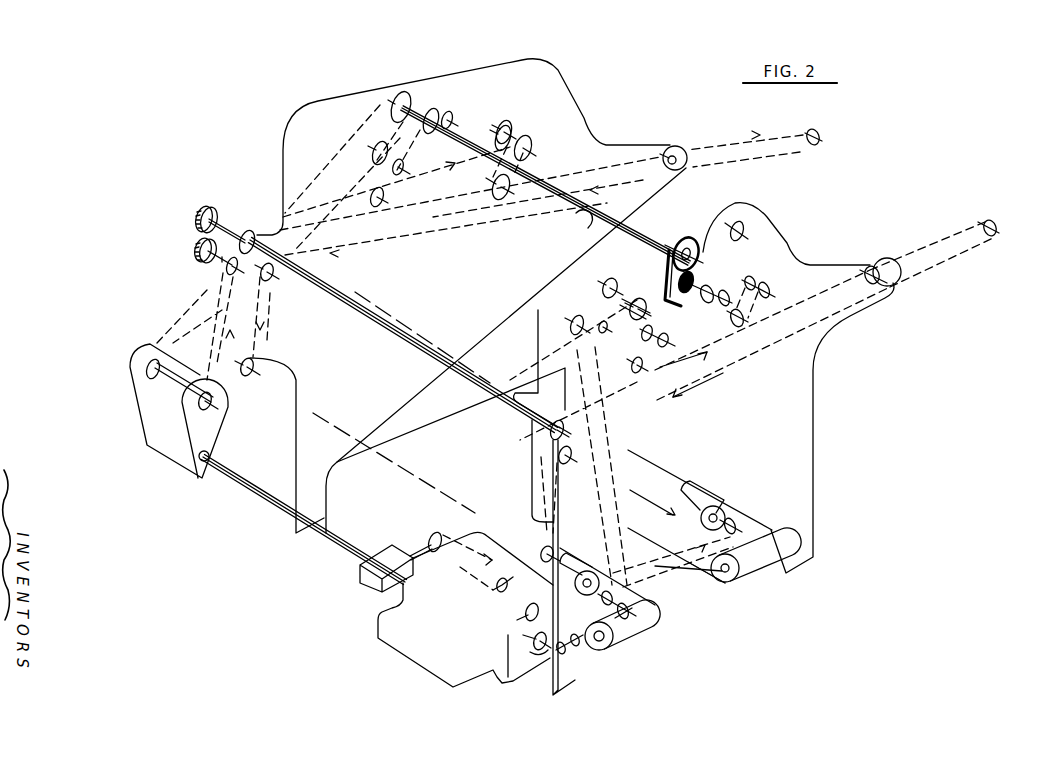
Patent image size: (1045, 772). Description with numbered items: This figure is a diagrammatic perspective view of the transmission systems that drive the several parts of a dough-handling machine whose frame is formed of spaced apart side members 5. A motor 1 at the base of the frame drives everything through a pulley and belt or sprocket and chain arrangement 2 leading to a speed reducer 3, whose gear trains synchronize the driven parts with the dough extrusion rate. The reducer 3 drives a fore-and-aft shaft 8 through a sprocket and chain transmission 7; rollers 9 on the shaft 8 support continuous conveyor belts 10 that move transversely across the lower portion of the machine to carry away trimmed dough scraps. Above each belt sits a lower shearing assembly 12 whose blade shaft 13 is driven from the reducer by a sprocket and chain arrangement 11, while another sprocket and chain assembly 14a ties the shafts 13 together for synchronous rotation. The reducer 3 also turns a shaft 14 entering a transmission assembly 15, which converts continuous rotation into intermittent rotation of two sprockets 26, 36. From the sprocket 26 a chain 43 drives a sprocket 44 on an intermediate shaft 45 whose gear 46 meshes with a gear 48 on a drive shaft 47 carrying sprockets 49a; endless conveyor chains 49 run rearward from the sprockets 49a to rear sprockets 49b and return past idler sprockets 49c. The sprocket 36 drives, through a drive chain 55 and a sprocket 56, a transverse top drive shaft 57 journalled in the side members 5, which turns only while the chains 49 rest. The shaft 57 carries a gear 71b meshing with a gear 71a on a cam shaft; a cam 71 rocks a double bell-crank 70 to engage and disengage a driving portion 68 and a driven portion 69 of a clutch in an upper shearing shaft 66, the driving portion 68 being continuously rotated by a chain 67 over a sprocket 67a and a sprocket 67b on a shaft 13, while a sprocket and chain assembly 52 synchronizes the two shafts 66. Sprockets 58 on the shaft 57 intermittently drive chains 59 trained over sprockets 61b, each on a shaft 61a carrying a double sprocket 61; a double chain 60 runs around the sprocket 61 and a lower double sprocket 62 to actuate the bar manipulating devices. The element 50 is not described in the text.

The motor 1 is at (372, 578).
The pulley and belt or sprocket and chain arrangement 2 is at (467, 570).
The speed reducer 3 is at (437, 643).
The side members 5 is at (540, 84).
The sprocket and chain transmission 7 is at (550, 608).
The shaft 8 is at (690, 587).
The rollers 9 is at (728, 583).
The conveyor belts 10 is at (752, 525).
The sprocket and chain arrangement 11 is at (580, 640).
The lower shearing assembly 12 is at (567, 570).
The shaft 13 is at (722, 523).
The shaft 14 is at (250, 487).
The sprocket and chain assembly 14a is at (658, 569).
The transmission assembly 15 is at (167, 447).
The sprocket 26 is at (203, 402).
The sprocket 36 is at (150, 366).
The chain 43 is at (212, 340).
The sprocket 44 is at (233, 240).
The intermediate rotatable shaft 45 is at (222, 257).
The gear 46 is at (203, 246).
The drive shaft 47 is at (385, 335).
The gear 48 is at (206, 209).
The endless conveyor chains 49 is at (593, 167).
The sprocket 49a is at (553, 430).
The sprocket 49b is at (885, 260).
The guide or idler sprocket 49c is at (560, 455).
The supply roller 50 is at (760, 158).
The sprocket and chain assembly 52 is at (720, 227).
The drive chain 55 is at (212, 292).
The sprocket 56 is at (400, 95).
The drive shaft 57 is at (580, 217).
The sprockets 58 is at (430, 113).
The chains 59 is at (498, 127).
The double chain 60 is at (394, 183).
The double sprocket 61 is at (563, 163).
The shaft 61a is at (506, 130).
The sprocket 61b is at (505, 133).
The double sprocket 62 is at (378, 208).
The shaft 66 is at (557, 120).
The chain 67 is at (617, 473).
The sprocket 67a is at (641, 303).
The sprocket 67b is at (630, 614).
The driving portion 68 is at (640, 312).
The driven portion 69 is at (628, 300).
The double bell-crank 70 is at (690, 298).
The cam 71 is at (687, 245).
The gear 71a is at (683, 250).
The gear 71b is at (698, 274).